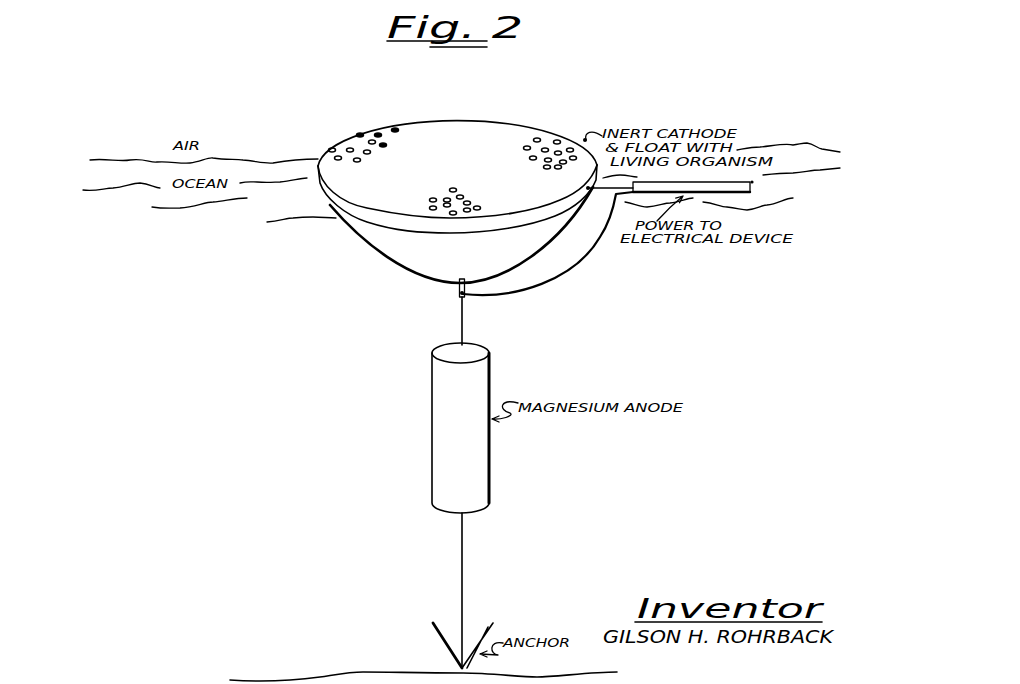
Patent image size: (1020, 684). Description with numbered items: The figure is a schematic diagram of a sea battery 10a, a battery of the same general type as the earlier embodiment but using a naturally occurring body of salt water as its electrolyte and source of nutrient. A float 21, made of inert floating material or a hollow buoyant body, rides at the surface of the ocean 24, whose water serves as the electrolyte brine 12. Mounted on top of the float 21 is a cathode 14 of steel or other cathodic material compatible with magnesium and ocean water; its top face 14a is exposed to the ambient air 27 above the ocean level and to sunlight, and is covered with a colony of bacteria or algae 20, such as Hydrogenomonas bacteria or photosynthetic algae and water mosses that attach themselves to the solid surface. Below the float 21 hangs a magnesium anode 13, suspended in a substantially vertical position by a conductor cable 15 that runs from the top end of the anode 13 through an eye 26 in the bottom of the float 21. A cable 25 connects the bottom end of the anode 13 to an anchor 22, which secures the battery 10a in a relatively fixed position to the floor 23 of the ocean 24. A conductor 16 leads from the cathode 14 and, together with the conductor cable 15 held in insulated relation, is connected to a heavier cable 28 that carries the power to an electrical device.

The battery 10a is at (460, 114).
The electrolyte brine 12 is at (451, 428).
The magnesium anode 13 is at (499, 381).
The cathode 14 is at (387, 222).
The top face of cathode 14a is at (373, 198).
The conductor cable 15 is at (542, 284).
The conductor 16 is at (602, 197).
The colony of bacteria or algae 20 is at (397, 130).
The float 21 is at (426, 250).
The anchor 22 is at (481, 619).
The floor of the ocean 23 is at (370, 664).
The ocean 24 is at (265, 189).
The cable 25 is at (465, 572).
The eye 26 is at (460, 293).
The ambient air 27 is at (282, 118).
The heavier cable 28 is at (736, 193).